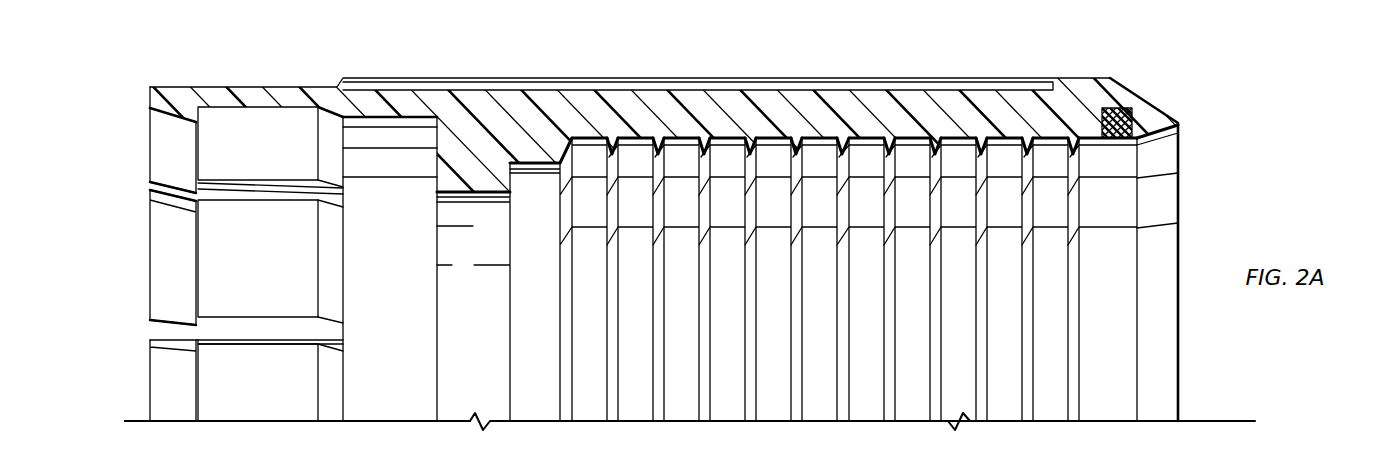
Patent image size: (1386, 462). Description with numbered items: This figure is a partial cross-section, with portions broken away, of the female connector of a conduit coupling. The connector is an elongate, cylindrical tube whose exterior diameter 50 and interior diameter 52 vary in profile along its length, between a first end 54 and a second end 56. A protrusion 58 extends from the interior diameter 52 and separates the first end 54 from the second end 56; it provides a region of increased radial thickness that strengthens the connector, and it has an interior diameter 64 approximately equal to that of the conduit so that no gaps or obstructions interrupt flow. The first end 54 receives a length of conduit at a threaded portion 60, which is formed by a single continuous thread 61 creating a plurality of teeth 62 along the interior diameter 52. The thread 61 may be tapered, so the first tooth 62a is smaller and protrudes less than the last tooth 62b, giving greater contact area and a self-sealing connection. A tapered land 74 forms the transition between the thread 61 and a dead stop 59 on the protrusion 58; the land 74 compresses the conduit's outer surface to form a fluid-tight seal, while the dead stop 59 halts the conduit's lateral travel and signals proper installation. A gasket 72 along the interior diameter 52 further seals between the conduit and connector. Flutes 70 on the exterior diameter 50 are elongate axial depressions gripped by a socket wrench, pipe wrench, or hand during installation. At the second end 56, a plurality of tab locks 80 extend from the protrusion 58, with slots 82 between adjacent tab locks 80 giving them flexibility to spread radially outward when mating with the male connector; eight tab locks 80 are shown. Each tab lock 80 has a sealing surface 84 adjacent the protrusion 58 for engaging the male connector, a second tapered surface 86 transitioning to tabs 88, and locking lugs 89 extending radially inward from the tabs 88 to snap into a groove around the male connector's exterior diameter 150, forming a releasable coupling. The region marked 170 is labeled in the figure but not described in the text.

The exterior diameter 50 is at (670, 227).
The interior diameter 52 is at (684, 134).
The first end 54 is at (1081, 78).
The second end 56 is at (239, 424).
The protrusion 58 is at (496, 184).
The dead stop 59 is at (520, 184).
The threaded portion 60 is at (869, 251).
The thread 61 is at (567, 402).
The teeth 62 is at (825, 230).
The first tooth 62a is at (1085, 152).
The last tooth 62b is at (598, 147).
The interior diameter of protrusion 64 is at (471, 197).
The flutes 70 is at (798, 83).
The gasket 72 is at (1128, 109).
The land 74 is at (545, 170).
The tab locks 80 is at (214, 245).
The slots 82 is at (143, 183).
The sealing surface 84 is at (378, 275).
The second tapered surface 86 is at (317, 156).
The tabs 88 is at (243, 155).
The locking lugs 89 is at (159, 161).
The exterior diameter 150 is at (808, 441).
The base region 170 is at (377, 441).